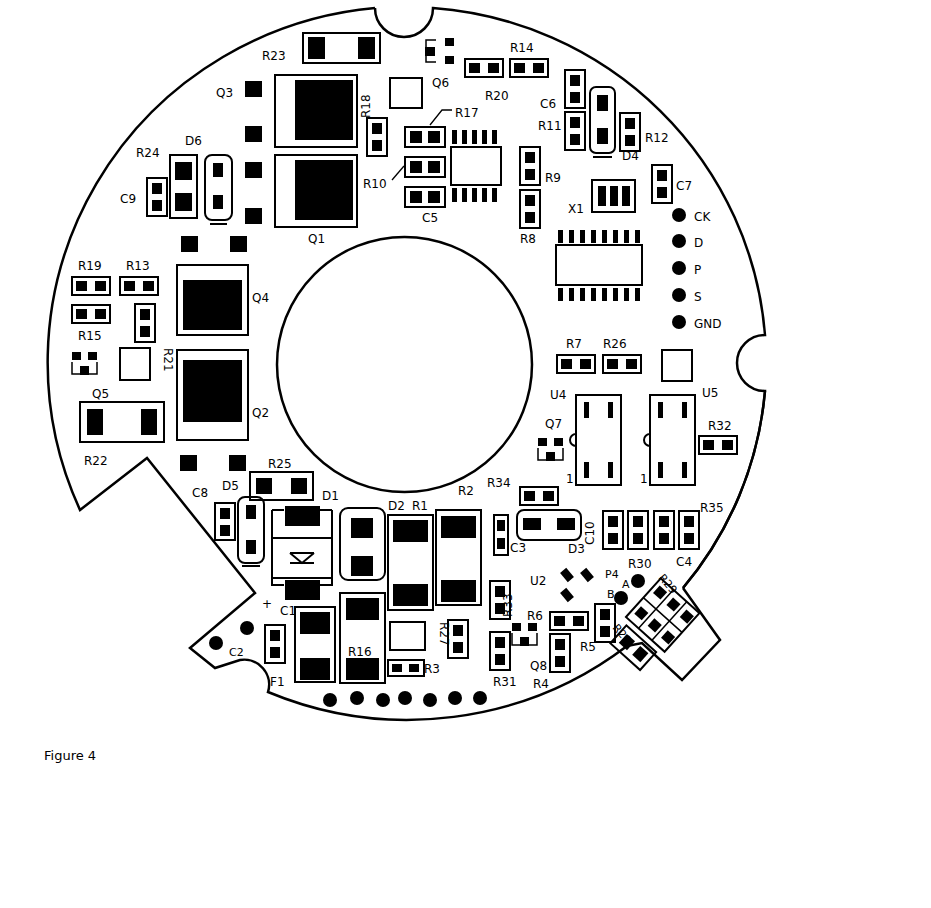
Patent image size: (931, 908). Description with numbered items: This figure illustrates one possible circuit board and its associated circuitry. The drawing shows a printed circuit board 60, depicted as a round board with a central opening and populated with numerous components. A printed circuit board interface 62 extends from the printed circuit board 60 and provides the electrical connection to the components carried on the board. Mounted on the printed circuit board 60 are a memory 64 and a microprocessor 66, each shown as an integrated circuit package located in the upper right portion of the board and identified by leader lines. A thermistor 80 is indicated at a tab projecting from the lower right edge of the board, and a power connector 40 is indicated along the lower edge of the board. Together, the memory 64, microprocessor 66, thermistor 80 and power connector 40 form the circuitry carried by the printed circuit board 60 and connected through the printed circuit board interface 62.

The power connector 40 is at (332, 722).
The printed circuit board 60 is at (690, 123).
The printed circuit board interface 62 is at (762, 240).
The memory 64 is at (483, 163).
The microprocessor 66 is at (598, 267).
The thermistor 80 is at (657, 668).